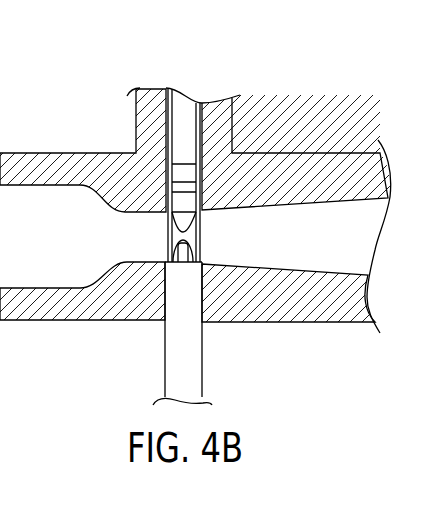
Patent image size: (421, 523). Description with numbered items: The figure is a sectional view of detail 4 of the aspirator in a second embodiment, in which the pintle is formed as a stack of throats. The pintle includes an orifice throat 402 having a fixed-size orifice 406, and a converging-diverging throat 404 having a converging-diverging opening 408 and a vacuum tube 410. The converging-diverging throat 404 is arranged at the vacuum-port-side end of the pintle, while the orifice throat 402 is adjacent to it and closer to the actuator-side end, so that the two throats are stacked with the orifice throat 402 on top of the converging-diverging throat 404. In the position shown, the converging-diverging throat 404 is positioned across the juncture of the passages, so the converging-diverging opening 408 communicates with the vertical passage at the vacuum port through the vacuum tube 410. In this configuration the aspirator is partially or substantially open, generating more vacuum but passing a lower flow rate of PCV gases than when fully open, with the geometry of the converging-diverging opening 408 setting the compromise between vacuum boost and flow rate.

The detail 4 is at (302, 106).
The orifice throat 402 is at (182, 162).
The converging-diverging throat 404 is at (204, 275).
The fixed-size orifice 406 is at (167, 185).
The converging-diverging opening 408 is at (197, 236).
The vacuum tube 410 is at (177, 249).